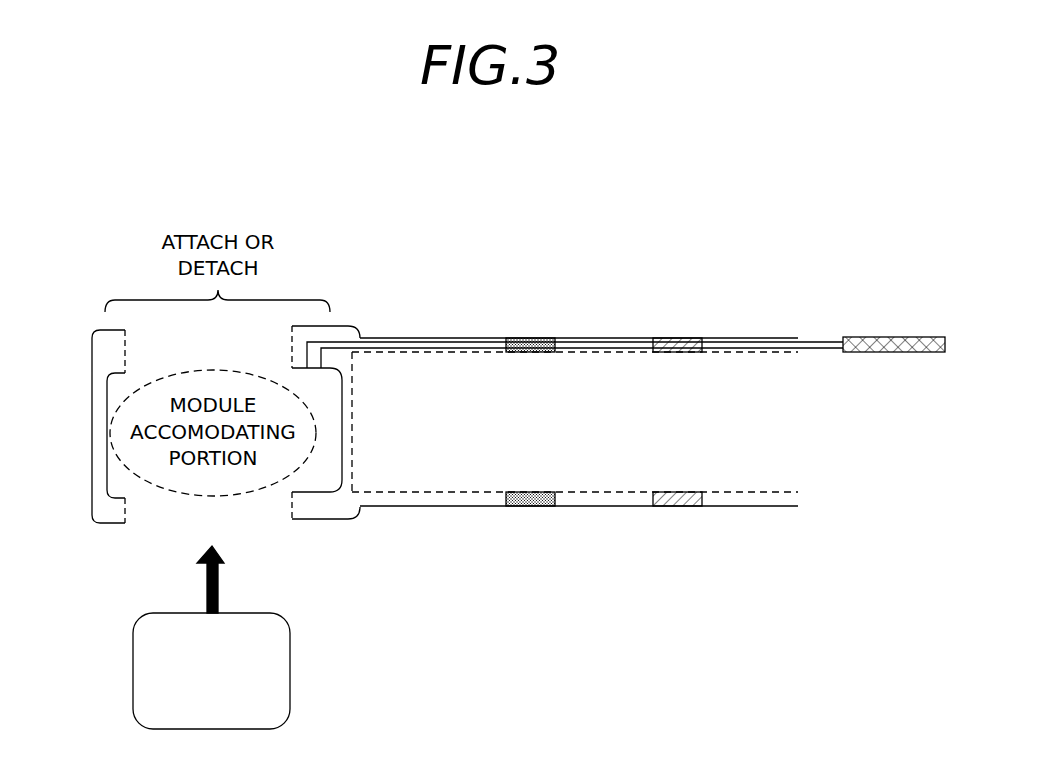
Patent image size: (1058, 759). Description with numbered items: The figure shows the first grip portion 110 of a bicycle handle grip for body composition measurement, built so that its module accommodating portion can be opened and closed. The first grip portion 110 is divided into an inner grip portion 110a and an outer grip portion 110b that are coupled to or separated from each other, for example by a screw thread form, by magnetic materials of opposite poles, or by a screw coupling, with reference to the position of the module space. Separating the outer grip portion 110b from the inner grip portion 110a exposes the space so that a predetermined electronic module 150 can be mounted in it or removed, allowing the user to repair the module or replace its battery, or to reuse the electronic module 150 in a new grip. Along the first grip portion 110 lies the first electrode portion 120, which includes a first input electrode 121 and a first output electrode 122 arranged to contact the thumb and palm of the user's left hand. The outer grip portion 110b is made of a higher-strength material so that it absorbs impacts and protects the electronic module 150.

The first grip portion 110 is at (428, 338).
The inner grip portion 110a is at (338, 326).
The outer grip portion 110b is at (100, 328).
The first electrode portion 120 is at (601, 372).
The first input electrode 121 is at (676, 397).
The first output electrode 122 is at (523, 338).
The electronic module 150 is at (290, 667).